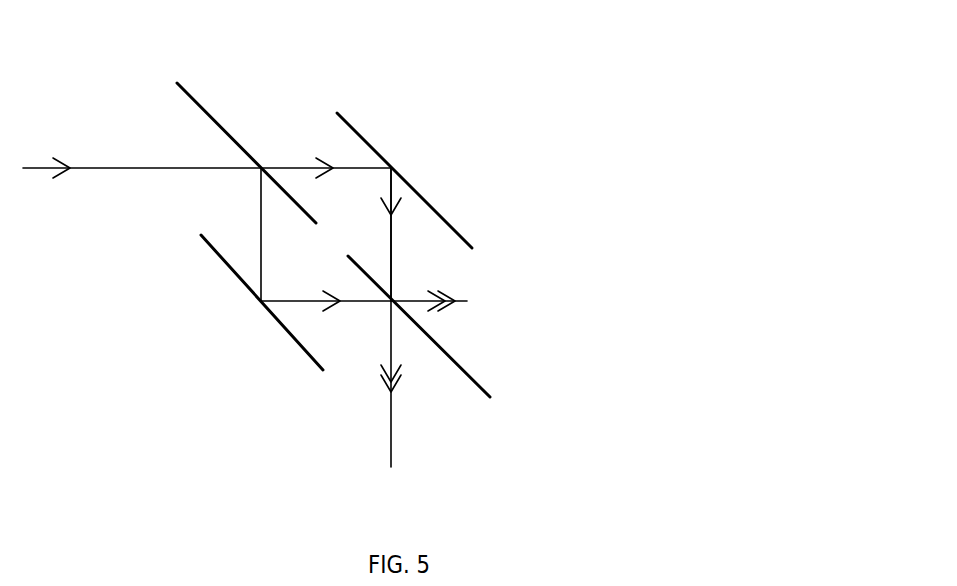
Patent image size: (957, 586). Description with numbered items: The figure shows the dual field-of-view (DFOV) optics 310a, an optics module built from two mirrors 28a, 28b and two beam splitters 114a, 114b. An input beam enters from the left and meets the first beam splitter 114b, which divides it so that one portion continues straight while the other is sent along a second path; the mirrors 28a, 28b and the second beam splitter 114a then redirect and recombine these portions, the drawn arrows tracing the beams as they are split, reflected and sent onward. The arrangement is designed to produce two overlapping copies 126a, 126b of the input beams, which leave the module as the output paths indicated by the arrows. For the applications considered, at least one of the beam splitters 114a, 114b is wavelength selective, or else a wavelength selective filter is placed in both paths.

The dual field-of-view (DFOV) optics 310a is at (311, 236).
The beam splitter 114a is at (443, 348).
The beam splitter 114b is at (218, 125).
The mirror 28a is at (438, 210).
The mirror 28b is at (242, 282).
The overlapping copy of the input beams 126a is at (391, 242).
The overlapping copy of the input beams 126b is at (260, 225).